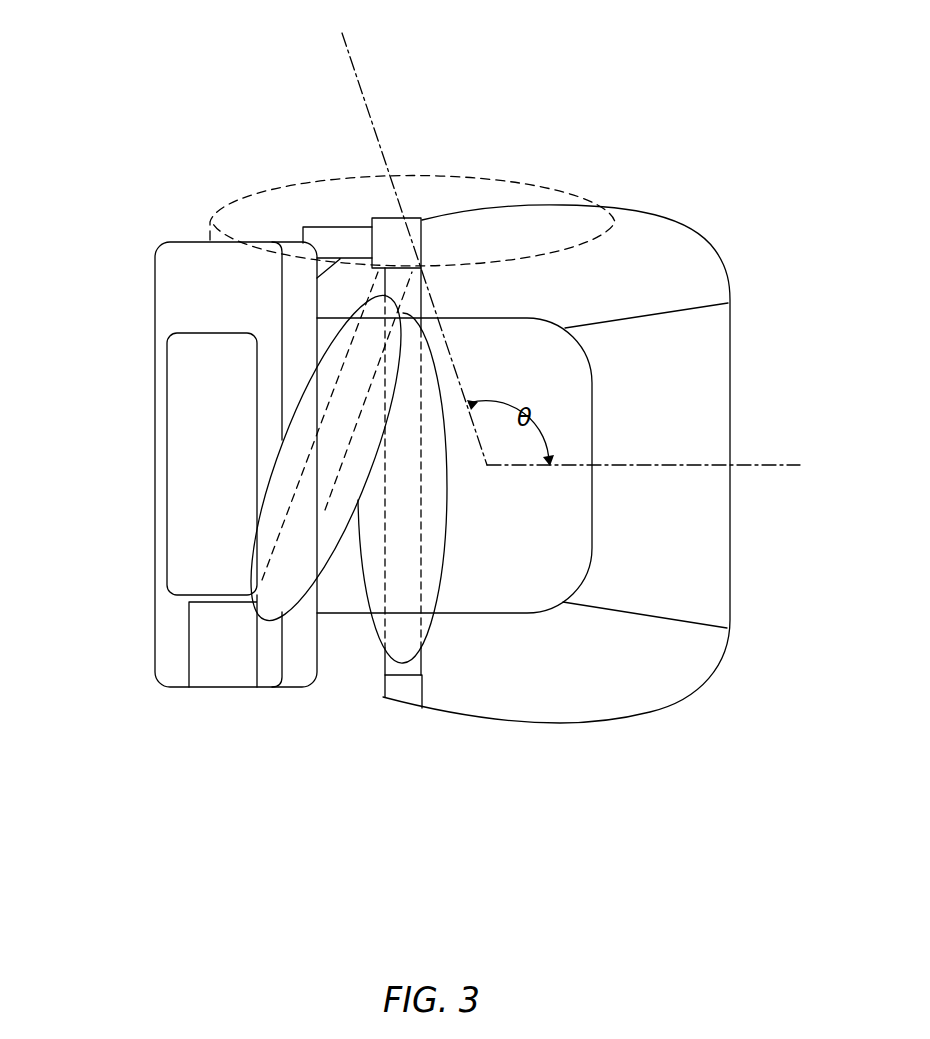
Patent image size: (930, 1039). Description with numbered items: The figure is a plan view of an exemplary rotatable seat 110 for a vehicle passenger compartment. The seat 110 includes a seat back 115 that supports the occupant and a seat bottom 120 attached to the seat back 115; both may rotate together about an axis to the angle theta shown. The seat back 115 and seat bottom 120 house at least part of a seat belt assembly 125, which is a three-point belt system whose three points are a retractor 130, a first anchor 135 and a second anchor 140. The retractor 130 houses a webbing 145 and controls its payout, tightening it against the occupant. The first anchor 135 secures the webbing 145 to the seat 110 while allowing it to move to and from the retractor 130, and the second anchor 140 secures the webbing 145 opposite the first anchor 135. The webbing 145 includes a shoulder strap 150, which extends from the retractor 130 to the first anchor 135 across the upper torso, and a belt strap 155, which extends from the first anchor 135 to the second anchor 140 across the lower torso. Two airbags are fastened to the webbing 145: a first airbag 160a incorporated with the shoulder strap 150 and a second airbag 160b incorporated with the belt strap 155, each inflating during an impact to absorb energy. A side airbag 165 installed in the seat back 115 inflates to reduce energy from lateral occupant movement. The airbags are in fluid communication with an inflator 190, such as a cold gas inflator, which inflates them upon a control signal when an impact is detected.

The rotatable seat 110 is at (106, 111).
The seat back 115 is at (153, 423).
The seat bottom 120 is at (688, 365).
The seat belt assembly 125 is at (219, 716).
The retractor 130 is at (189, 655).
The first anchor 135 is at (380, 218).
The second anchor 140 is at (398, 710).
The webbing 145 is at (406, 306).
The shoulder strap 150 is at (325, 510).
The belt strap 155 is at (438, 590).
The first airbag 160a is at (295, 543).
The second airbag 160b is at (398, 549).
The side airbag 165 is at (523, 186).
The inflator 190 is at (328, 238).